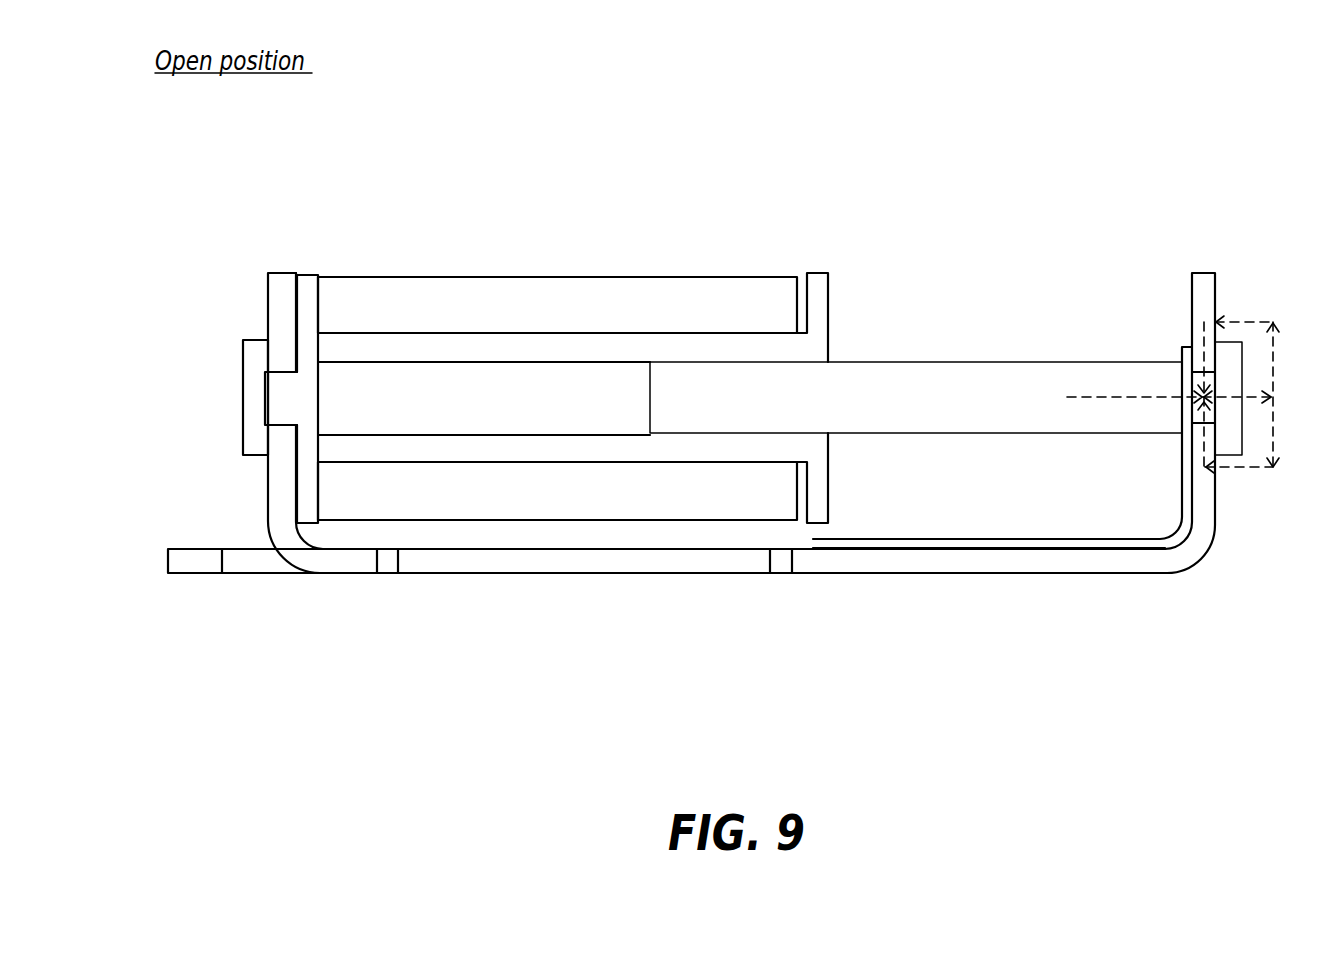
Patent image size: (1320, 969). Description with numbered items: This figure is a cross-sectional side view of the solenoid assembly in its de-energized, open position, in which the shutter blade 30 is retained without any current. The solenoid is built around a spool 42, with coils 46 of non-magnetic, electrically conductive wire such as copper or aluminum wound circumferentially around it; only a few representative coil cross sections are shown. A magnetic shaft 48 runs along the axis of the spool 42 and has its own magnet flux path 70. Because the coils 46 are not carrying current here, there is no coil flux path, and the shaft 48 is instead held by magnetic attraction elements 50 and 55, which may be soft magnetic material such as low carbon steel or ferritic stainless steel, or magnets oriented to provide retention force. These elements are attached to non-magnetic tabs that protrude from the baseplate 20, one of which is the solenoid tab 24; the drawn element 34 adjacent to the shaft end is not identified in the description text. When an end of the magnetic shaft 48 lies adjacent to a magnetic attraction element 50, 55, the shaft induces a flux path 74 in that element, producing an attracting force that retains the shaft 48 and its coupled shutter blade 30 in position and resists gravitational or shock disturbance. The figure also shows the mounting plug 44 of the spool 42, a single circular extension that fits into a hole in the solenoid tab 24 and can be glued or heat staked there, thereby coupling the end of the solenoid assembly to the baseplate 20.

The baseplate 20 is at (423, 575).
The solenoid tab 24 is at (277, 265).
The shutter blade 30 is at (973, 542).
The end wall strip 34 is at (1182, 347).
The spool 42 is at (308, 272).
The mounting plug 44 is at (263, 403).
The coils 46 is at (635, 275).
The magnetic shaft 48 is at (915, 363).
The magnetic attraction element 50 is at (1232, 460).
The magnetic attraction element 55 is at (243, 387).
The magnet flux path 70 is at (1113, 388).
The flux path 74 is at (1258, 315).